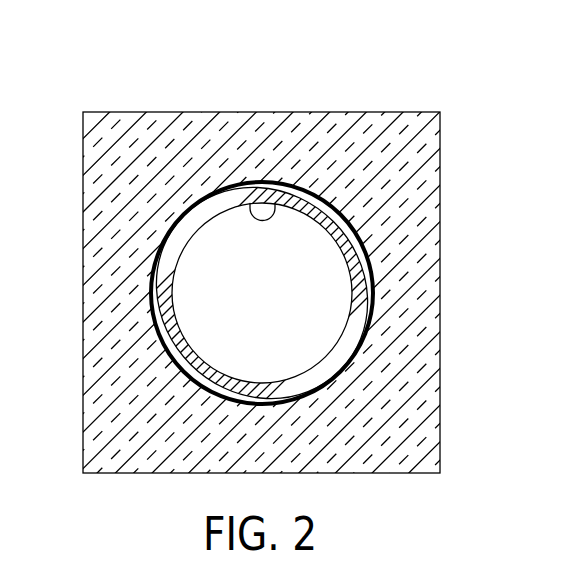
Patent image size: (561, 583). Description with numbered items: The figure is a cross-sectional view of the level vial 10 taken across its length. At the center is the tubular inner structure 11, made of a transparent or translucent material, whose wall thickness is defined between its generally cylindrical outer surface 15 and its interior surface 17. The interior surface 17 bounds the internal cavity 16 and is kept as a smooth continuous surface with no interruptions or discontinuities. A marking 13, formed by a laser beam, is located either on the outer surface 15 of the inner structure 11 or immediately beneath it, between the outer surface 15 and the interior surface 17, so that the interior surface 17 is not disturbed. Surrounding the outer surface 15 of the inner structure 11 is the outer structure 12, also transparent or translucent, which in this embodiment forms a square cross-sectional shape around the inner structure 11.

The level vial 10 is at (112, 90).
The inner structure 11 is at (358, 263).
The outer structure 12 is at (390, 112).
The marking 13 is at (369, 327).
The outer surface 15 is at (152, 293).
The internal cavity 16 is at (243, 320).
The interior surface 17 is at (277, 203).